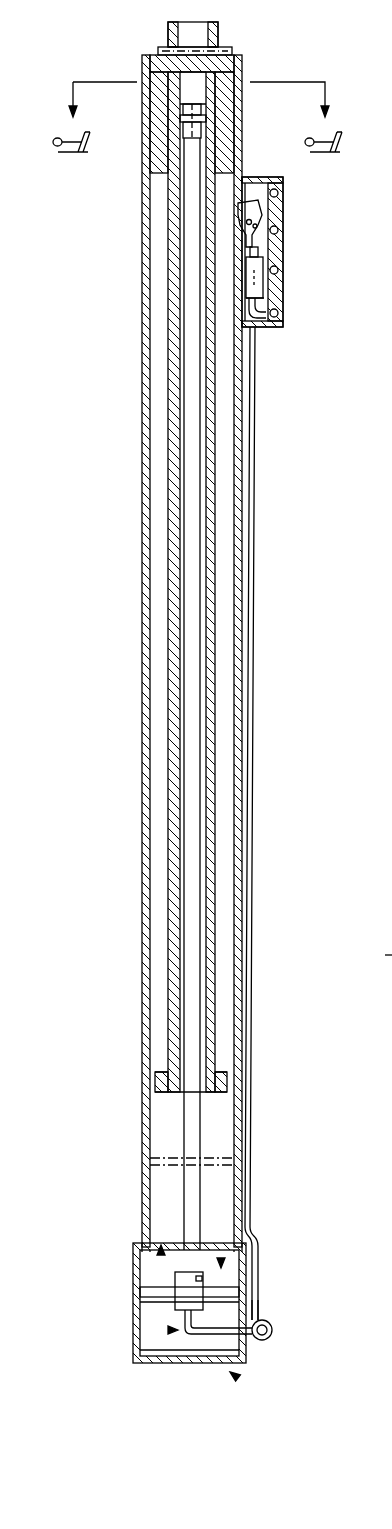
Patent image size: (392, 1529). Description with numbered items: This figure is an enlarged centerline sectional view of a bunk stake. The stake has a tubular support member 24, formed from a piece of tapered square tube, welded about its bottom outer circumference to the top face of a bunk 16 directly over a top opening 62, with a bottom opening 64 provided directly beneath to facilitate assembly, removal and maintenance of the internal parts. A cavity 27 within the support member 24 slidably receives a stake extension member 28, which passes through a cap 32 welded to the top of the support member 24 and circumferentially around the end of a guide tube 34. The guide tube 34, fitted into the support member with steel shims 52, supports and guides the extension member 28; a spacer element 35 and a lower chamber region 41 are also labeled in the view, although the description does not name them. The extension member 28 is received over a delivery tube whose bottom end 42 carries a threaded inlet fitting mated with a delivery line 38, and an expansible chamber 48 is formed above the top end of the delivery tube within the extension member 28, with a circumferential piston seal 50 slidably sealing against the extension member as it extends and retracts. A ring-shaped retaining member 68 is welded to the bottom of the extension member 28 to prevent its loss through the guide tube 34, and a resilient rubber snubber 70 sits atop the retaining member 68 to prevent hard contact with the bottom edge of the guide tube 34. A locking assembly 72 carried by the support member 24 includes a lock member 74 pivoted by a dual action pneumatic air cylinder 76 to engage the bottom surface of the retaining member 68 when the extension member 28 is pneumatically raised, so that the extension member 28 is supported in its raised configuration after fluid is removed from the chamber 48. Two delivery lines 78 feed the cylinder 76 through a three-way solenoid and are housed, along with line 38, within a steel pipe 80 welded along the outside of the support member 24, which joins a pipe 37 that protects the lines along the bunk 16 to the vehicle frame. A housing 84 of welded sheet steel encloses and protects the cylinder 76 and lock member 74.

The bunk 16 is at (133, 1281).
The tubular support member 24 is at (142, 385).
The cavity 27 is at (213, 1140).
The stake extension member 28 is at (168, 616).
The cap 32 is at (162, 50).
The guide tube 34 is at (160, 155).
The spacer 35 is at (208, 93).
The pipe 37 is at (278, 1330).
The delivery line 38 is at (200, 1333).
The chamber 41 is at (170, 1331).
The bottom end 42 is at (160, 1254).
The expansible chamber 48 is at (205, 94).
The piston seal 50 is at (192, 97).
The steel shims 52 is at (373, 956).
The top opening 62 is at (221, 1258).
The bottom opening 64 is at (238, 1378).
The retaining member 68 is at (157, 1085).
The snubber 70 is at (157, 1074).
The locking assembly 72 is at (302, 240).
The lock member 74 is at (262, 212).
The pneumatic air cylinder 76 is at (263, 272).
The delivery lines 78 is at (262, 305).
The pipe 80 is at (256, 514).
The housing 84 is at (268, 327).